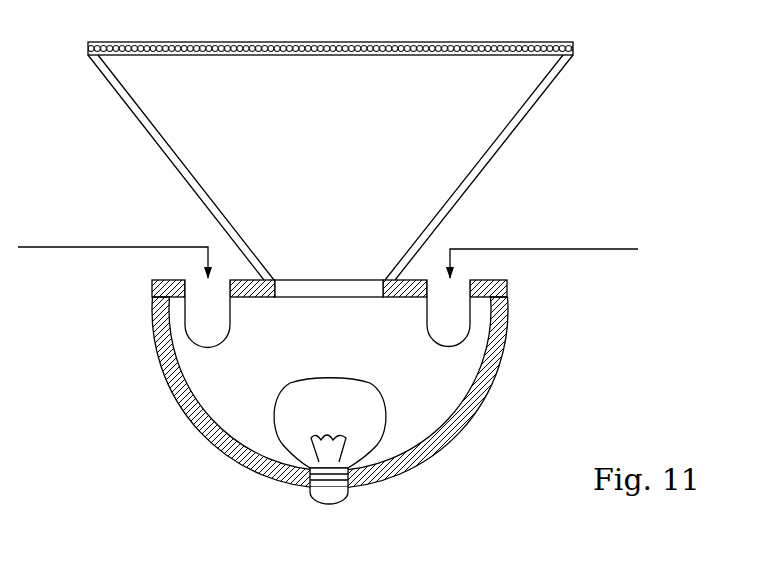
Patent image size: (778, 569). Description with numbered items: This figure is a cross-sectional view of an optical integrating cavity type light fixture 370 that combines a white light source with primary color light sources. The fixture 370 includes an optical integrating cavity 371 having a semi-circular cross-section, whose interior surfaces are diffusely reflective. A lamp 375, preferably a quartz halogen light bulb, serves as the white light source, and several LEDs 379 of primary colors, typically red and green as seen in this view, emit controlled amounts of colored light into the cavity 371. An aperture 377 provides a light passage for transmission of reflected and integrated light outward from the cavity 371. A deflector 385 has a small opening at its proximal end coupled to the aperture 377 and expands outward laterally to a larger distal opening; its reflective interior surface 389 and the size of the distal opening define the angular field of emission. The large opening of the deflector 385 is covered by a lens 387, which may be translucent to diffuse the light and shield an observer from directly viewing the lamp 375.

The optical integrating cavity type light fixture 370 is at (405, 161).
The lens 387 is at (311, 56).
The reflective interior surface 389 is at (199, 182).
The deflector 385 is at (474, 185).
The aperture 377 is at (318, 278).
The optical integrating cavity 371 is at (330, 384).
The LEDs 379 is at (206, 346).
The lamp 375 is at (341, 492).